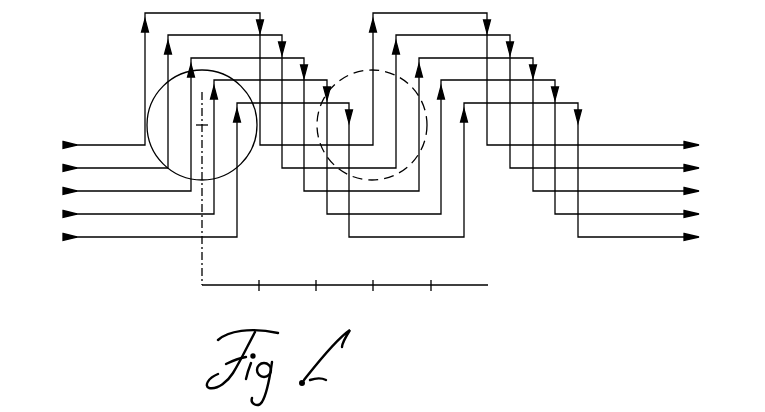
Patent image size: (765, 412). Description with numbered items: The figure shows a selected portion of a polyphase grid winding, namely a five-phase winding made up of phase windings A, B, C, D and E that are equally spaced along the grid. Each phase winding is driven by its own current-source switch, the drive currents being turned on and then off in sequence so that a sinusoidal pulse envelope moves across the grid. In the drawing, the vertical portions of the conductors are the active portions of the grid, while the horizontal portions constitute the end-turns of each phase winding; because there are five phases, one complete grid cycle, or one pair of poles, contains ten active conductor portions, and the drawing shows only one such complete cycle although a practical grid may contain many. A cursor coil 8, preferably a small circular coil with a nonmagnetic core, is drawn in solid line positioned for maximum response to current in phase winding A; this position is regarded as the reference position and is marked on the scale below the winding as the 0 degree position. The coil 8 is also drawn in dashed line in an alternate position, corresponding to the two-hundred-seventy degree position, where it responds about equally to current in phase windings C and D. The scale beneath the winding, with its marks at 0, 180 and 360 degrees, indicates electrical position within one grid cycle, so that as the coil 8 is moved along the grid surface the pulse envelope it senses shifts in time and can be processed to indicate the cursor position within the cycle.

The cursor coil 8 is at (248, 156).
The phase winding A is at (370, 84).
The phase winding B is at (370, 106).
The phase winding C is at (370, 129).
The phase winding D is at (370, 152).
The phase winding E is at (370, 175).
The 0 degree axis mark 0 is at (227, 298).
The 180 degree axis mark 180 is at (316, 296).
The 360 degree axis mark 360 is at (430, 296).